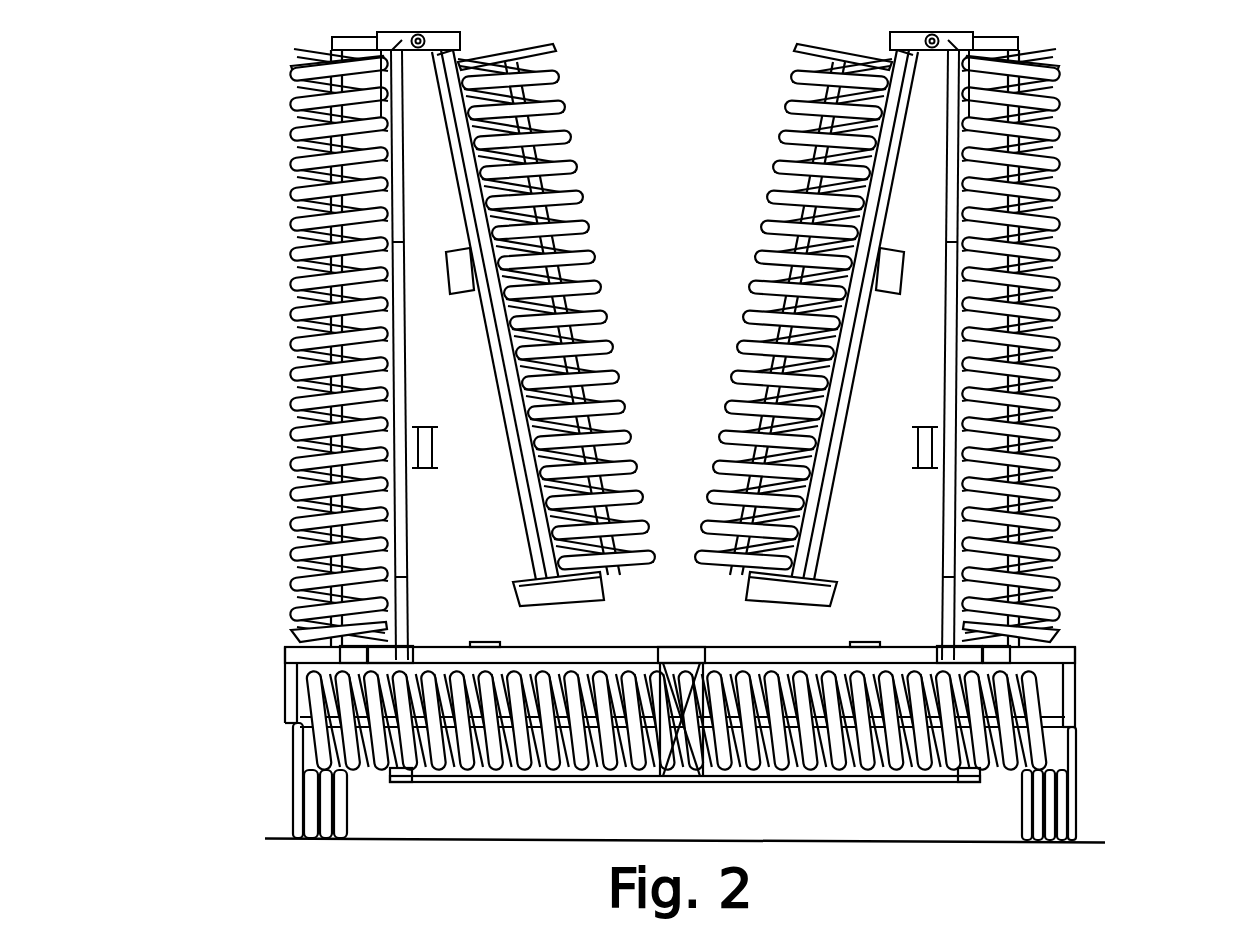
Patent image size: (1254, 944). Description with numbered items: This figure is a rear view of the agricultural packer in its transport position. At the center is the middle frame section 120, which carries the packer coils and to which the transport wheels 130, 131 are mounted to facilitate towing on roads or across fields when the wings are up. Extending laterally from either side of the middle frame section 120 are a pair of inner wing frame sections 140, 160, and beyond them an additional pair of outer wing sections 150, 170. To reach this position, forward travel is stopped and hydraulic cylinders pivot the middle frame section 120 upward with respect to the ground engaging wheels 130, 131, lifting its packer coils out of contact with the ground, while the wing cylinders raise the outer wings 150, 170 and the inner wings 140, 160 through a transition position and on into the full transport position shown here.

The middle frame section 120 is at (683, 783).
The transport wheel 130 is at (296, 790).
The transport wheel 131 is at (1076, 813).
The inner wing frame section 140 is at (942, 497).
The outer wing section 150 is at (762, 190).
The inner wing frame section 160 is at (262, 400).
The outer wing section 170 is at (580, 133).